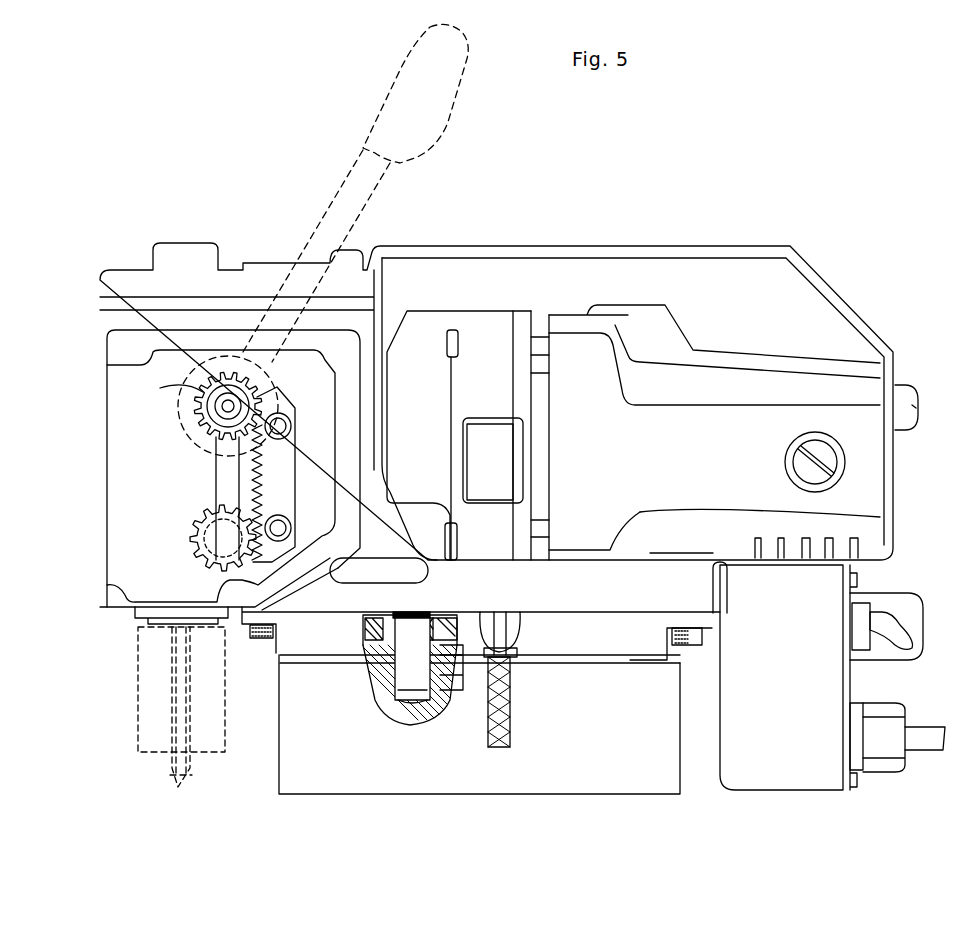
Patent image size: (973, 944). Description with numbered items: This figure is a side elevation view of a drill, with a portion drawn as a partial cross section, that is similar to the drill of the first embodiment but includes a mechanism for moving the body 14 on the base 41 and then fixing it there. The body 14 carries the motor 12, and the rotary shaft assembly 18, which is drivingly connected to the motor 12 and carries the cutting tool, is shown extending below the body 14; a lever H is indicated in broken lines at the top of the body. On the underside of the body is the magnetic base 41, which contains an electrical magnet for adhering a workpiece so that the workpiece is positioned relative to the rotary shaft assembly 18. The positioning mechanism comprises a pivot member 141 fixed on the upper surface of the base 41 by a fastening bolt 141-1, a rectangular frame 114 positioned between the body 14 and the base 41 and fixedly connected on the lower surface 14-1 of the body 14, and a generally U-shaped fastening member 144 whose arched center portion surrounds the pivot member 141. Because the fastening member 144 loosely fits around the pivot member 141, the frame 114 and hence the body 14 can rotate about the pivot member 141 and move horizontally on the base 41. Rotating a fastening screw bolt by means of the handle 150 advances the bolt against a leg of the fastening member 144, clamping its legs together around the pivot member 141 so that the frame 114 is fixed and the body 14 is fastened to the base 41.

The handle H is at (372, 176).
The body 14 is at (357, 325).
The motor 12 is at (495, 330).
The lower surface 14-1 is at (610, 612).
The rectangular frame 114 is at (579, 640).
The magnetic base 41 is at (283, 750).
The fastening member 144 is at (362, 630).
The fastening bolt 141-1 is at (380, 703).
The pivot member 141 is at (450, 672).
The handle 150 is at (507, 700).
The rotary shaft assembly 18 is at (133, 612).